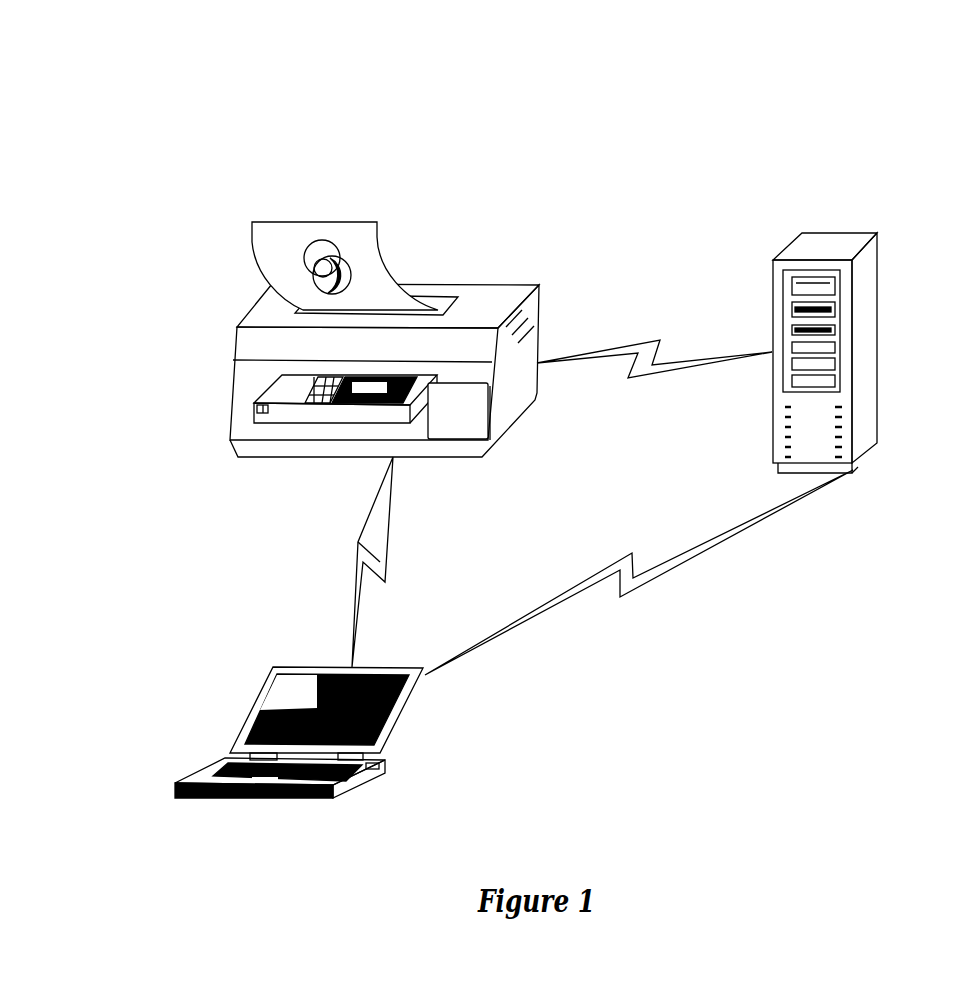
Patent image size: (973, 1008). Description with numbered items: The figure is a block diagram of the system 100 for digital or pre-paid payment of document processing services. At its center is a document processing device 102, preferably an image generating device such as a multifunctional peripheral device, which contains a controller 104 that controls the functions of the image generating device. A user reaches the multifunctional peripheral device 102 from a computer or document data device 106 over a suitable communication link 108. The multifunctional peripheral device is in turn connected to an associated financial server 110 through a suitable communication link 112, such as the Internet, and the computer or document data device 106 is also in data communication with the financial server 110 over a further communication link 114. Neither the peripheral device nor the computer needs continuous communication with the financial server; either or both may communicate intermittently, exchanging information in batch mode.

The system 100 is at (612, 110).
The document processing device 102 is at (527, 283).
The controller 104 is at (490, 430).
The computer or document data device 106 is at (327, 665).
The communication link 108 is at (390, 573).
The financial server 110 is at (870, 232).
The communication link 112 is at (613, 348).
The communication link 114 is at (632, 555).